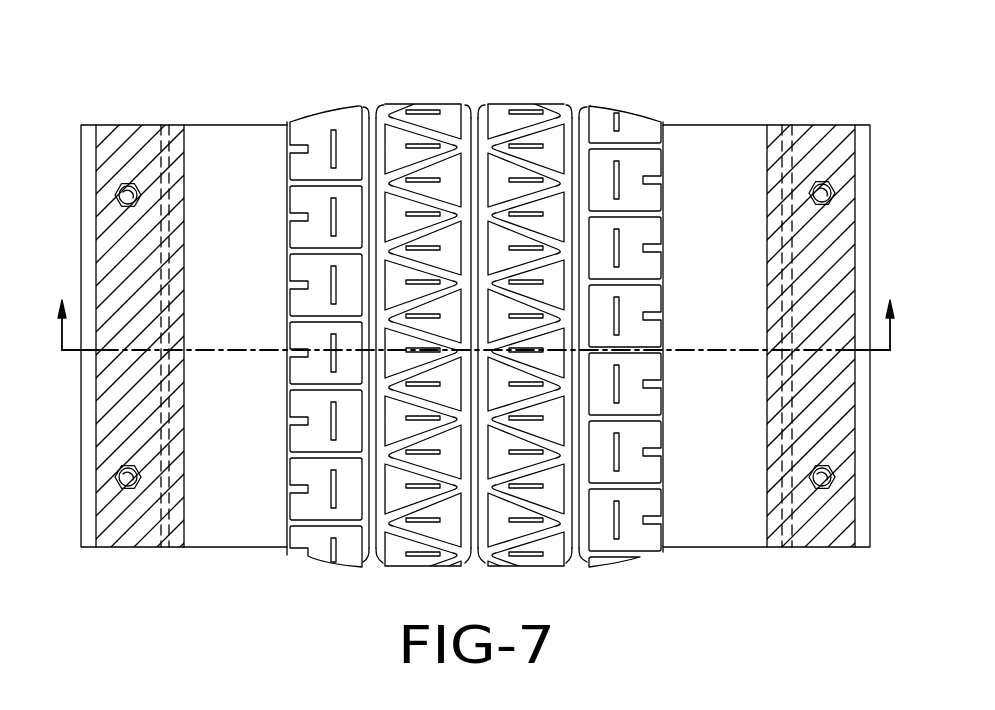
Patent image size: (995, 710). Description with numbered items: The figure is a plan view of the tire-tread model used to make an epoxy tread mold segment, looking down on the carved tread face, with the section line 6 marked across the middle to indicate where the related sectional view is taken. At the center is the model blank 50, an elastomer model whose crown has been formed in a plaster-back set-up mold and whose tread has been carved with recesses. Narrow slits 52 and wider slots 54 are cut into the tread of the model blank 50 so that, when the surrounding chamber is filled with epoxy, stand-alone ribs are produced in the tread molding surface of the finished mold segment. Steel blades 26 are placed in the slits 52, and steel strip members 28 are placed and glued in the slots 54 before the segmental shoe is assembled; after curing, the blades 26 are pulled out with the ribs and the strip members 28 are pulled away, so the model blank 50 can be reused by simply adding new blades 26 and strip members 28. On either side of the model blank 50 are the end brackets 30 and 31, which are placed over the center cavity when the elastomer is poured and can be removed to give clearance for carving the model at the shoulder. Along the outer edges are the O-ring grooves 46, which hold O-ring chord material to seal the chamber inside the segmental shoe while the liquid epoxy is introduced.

The steel blades 26 is at (330, 130).
The steel strip members 28 is at (373, 117).
The end bracket 30 is at (232, 128).
The end bracket 31 is at (718, 127).
The O-ring grooves 46 is at (163, 158).
The model blank 50 is at (300, 128).
The slits 52 is at (527, 130).
The slots 54 is at (370, 113).
The section line 6- 6 is at (474, 310).